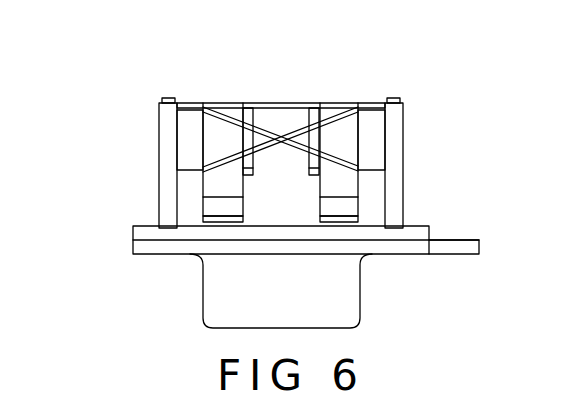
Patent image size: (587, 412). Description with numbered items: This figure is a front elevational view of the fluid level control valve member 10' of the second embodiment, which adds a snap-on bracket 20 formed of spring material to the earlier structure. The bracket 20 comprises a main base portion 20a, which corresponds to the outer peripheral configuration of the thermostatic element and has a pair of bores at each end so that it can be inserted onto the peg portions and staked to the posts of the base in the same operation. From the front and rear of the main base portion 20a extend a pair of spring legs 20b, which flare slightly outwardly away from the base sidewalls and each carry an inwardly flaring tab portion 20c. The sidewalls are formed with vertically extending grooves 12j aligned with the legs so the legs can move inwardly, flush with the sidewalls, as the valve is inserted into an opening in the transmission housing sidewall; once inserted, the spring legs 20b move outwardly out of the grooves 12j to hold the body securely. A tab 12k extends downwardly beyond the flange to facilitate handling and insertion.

The fluid level control valve member 10' is at (293, 137).
The snap-on bracket 20 is at (281, 120).
The main base portion 20a is at (333, 102).
The spring legs 20b is at (217, 181).
The tab portion 20c is at (220, 207).
The vertically extending grooves 12j is at (222, 218).
The tab 12k is at (233, 297).